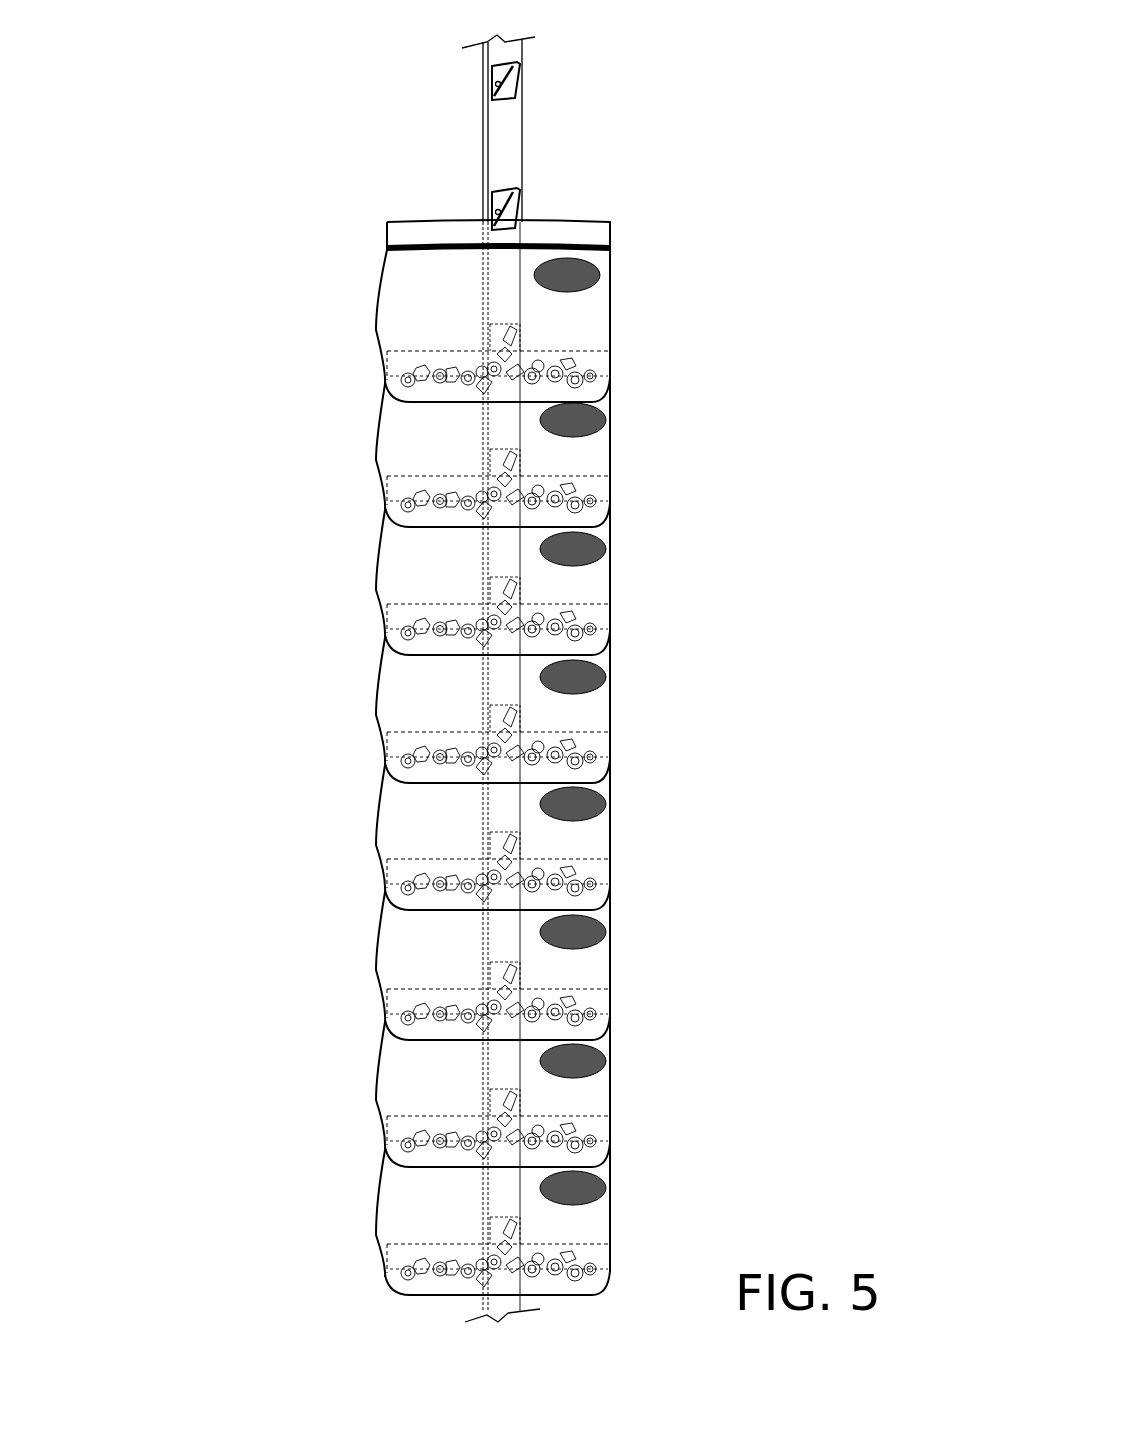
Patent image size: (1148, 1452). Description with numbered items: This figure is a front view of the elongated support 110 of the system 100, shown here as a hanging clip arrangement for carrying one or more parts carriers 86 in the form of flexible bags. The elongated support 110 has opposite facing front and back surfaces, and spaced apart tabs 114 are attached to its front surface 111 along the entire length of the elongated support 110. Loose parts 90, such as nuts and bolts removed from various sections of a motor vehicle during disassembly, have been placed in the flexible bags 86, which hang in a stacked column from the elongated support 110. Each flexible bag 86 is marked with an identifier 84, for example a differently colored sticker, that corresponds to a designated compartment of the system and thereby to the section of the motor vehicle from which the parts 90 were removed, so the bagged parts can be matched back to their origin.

The identifier 84 is at (610, 267).
The parts carrier 86 is at (615, 447).
The loose parts 90 is at (590, 612).
The system 100 is at (725, 145).
The elongated support 110 is at (477, 118).
The front surface 111 is at (500, 159).
The tabs 114 is at (520, 85).